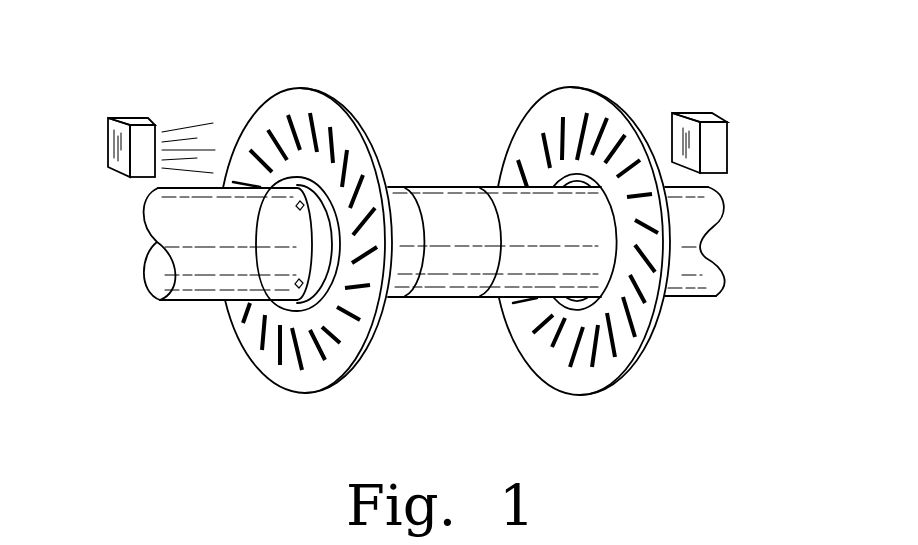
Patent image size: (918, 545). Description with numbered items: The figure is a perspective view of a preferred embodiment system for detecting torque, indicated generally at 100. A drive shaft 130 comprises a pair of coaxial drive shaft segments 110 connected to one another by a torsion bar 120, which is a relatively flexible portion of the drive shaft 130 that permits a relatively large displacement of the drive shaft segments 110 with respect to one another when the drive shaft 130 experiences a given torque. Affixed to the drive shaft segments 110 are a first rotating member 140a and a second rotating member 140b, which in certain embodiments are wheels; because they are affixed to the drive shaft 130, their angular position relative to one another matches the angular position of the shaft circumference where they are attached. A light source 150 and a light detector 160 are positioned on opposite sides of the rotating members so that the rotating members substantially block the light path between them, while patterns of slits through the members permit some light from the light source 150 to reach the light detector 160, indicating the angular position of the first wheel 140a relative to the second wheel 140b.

The system for detecting torque 100 is at (440, 96).
The drive shaft segments 110 is at (187, 302).
The torsion bar 120 is at (440, 298).
The drive shaft 130 is at (718, 214).
The first rotating member 140a is at (277, 378).
The second rotating member 140b is at (557, 378).
The light source 150 is at (132, 118).
The light detector 160 is at (720, 144).